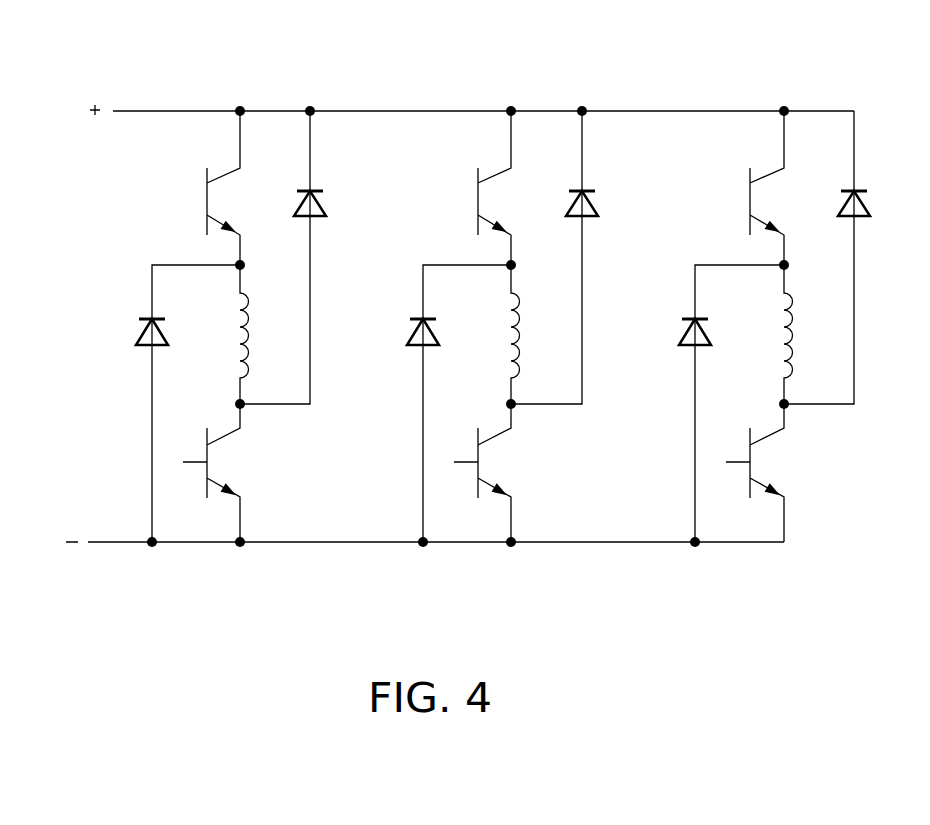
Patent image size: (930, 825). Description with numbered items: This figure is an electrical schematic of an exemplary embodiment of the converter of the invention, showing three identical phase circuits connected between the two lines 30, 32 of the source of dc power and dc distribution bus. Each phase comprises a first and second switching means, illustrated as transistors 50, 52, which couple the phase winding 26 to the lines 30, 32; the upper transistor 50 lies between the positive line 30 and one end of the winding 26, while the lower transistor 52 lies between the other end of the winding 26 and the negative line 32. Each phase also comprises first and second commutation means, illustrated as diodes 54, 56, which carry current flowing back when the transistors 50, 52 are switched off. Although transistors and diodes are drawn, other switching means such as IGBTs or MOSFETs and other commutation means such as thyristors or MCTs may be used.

The winding 26 is at (248, 343).
The line 30 is at (157, 111).
The line 32 is at (124, 542).
The transistor 50 is at (228, 177).
The transistor 52 is at (218, 478).
The diode 54 is at (318, 202).
The diode 56 is at (138, 326).